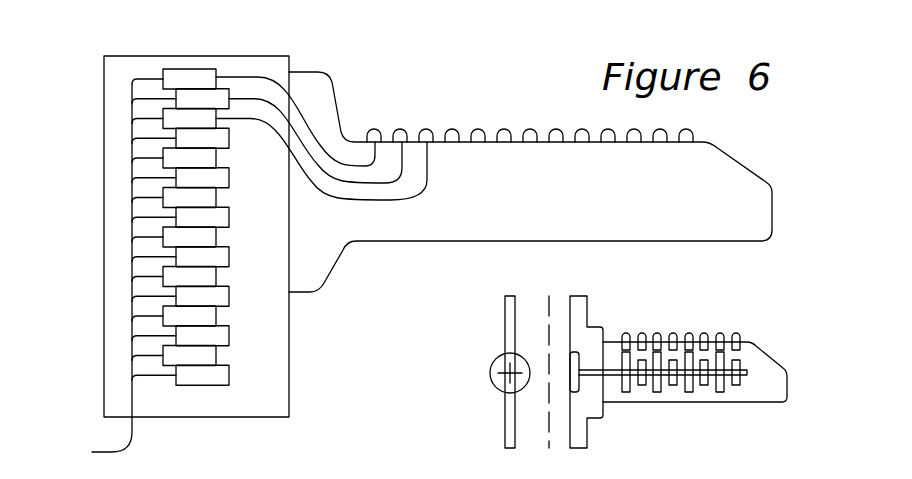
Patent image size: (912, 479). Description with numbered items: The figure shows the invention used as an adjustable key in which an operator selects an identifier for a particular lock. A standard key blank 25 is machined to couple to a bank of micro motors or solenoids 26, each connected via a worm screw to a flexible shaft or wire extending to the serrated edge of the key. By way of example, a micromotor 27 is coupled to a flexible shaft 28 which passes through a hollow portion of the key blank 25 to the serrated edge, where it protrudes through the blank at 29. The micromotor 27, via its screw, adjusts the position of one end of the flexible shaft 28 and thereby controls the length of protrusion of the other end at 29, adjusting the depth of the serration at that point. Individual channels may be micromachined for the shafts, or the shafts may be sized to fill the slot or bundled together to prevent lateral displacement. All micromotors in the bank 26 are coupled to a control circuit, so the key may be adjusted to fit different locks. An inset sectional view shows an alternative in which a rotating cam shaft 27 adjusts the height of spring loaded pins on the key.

The key blank 25 is at (768, 182).
The bank of micro motors or solenoids 26 is at (102, 107).
The micromotor 27 is at (163, 63).
The flexible shaft 28 is at (268, 77).
The protrusion at serrated edge 29 is at (373, 125).